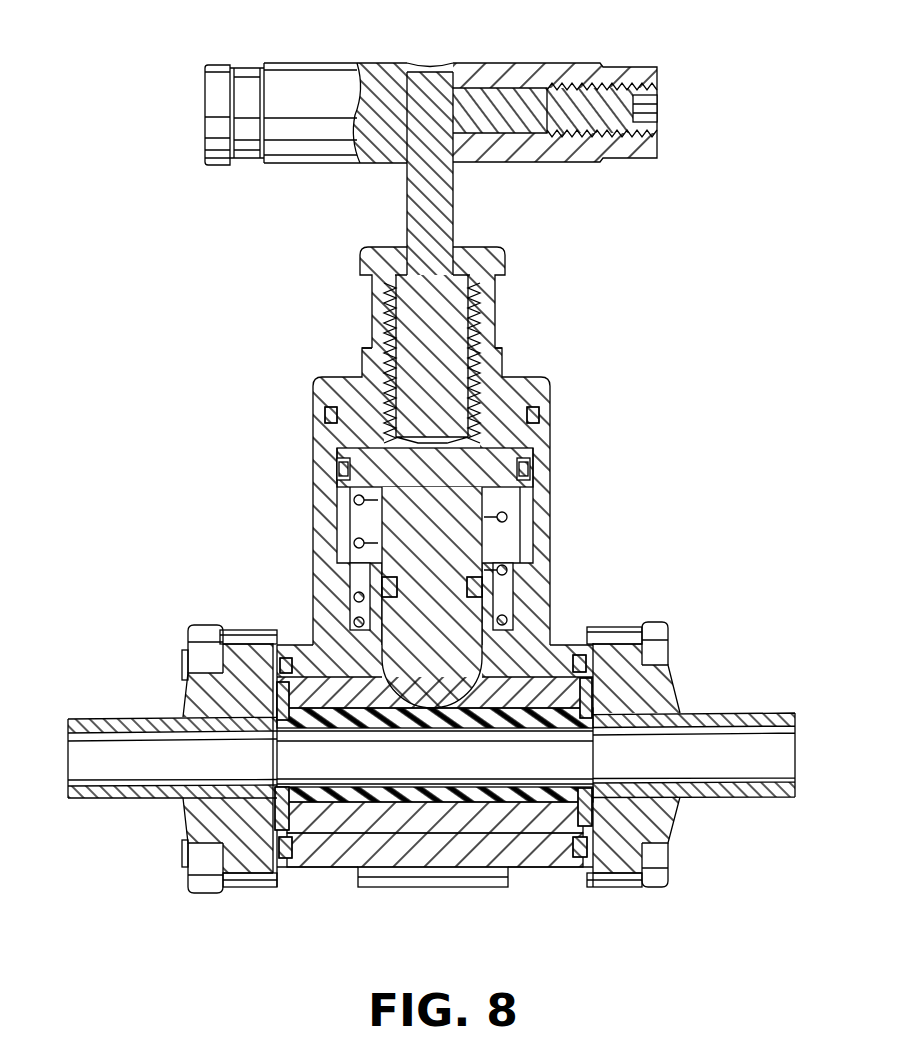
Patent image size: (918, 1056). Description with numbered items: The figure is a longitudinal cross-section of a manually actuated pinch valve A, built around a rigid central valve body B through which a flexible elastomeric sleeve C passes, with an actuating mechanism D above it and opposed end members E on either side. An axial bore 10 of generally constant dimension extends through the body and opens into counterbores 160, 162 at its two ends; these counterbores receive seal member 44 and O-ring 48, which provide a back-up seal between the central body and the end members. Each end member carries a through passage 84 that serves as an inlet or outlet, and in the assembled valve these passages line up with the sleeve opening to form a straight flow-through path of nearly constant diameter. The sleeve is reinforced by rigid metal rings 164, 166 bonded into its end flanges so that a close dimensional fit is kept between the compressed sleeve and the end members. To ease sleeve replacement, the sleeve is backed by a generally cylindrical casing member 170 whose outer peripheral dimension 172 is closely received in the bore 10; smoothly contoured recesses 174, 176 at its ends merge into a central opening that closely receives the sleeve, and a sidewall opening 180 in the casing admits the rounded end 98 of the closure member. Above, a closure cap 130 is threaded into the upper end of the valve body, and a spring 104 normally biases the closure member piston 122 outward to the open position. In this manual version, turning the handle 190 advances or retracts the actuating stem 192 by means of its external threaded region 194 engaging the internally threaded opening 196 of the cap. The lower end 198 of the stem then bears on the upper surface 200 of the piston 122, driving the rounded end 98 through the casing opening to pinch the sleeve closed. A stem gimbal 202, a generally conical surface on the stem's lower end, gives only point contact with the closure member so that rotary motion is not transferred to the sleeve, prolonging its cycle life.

The handle 190 is at (300, 82).
The actuating stem 192 is at (430, 216).
The external threaded region 194 is at (498, 316).
The closure cap 130 is at (493, 363).
The internally threaded opening 196 is at (363, 352).
The lower end of the actuating stem 198 is at (440, 412).
The upper surface of the piston 200 is at (487, 437).
The stem gimbal 202 is at (417, 444).
The closure member piston 122 is at (500, 468).
The spring 104 is at (500, 562).
The rounded end of the closure member 98 is at (427, 650).
The axial bore 10 is at (313, 653).
The smoothly contoured recess 174 is at (297, 798).
The sidewall opening 180 is at (405, 729).
The casing member 170 is at (433, 823).
The outer peripheral dimension 172 is at (517, 838).
The counterbore 160 is at (290, 860).
The counterbore 162 is at (603, 862).
The rigid metal ring 164 is at (274, 823).
The rigid metal ring 166 is at (593, 784).
The smoothly contoured recess 176 is at (577, 815).
The through passage 84 is at (150, 785).
The seal member 44 is at (278, 655).
The O-ring 48 is at (590, 643).
The pinch valve A is at (606, 223).
The central valve body B is at (427, 858).
The flexible elastomeric sleeve C is at (467, 722).
The actuating mechanism D is at (358, 467).
The valve body end member E is at (162, 702).